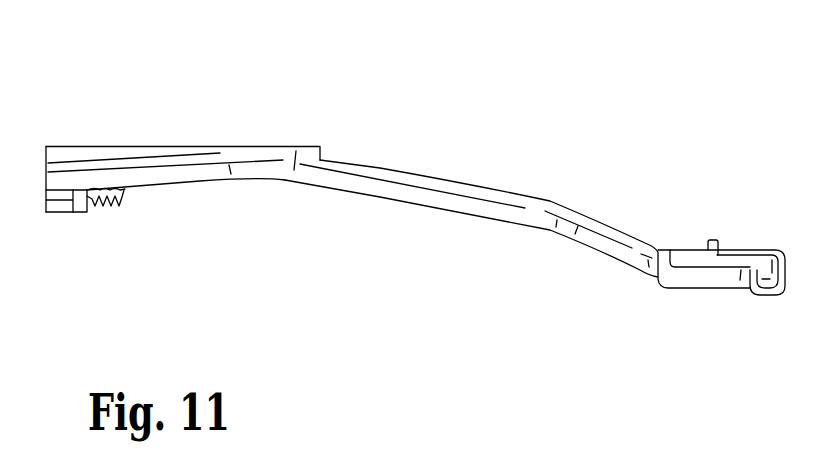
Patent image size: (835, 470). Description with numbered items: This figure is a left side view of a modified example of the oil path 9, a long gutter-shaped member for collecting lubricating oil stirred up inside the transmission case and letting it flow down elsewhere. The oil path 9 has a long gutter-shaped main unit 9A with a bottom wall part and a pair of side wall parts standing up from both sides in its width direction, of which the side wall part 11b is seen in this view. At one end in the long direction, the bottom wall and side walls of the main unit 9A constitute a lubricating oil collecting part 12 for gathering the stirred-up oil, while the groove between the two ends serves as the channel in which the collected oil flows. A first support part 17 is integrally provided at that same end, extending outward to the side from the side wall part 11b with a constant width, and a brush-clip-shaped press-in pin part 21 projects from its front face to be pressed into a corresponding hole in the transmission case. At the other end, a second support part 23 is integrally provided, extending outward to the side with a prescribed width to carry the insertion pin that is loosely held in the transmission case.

The oil path 9 is at (493, 82).
The main unit 9A is at (385, 166).
The side wall part 11b is at (463, 207).
The lubricating oil collecting part 12 is at (234, 142).
The first support part 17 is at (80, 214).
The press-in pin part 21 is at (123, 202).
The second support part 23 is at (768, 282).